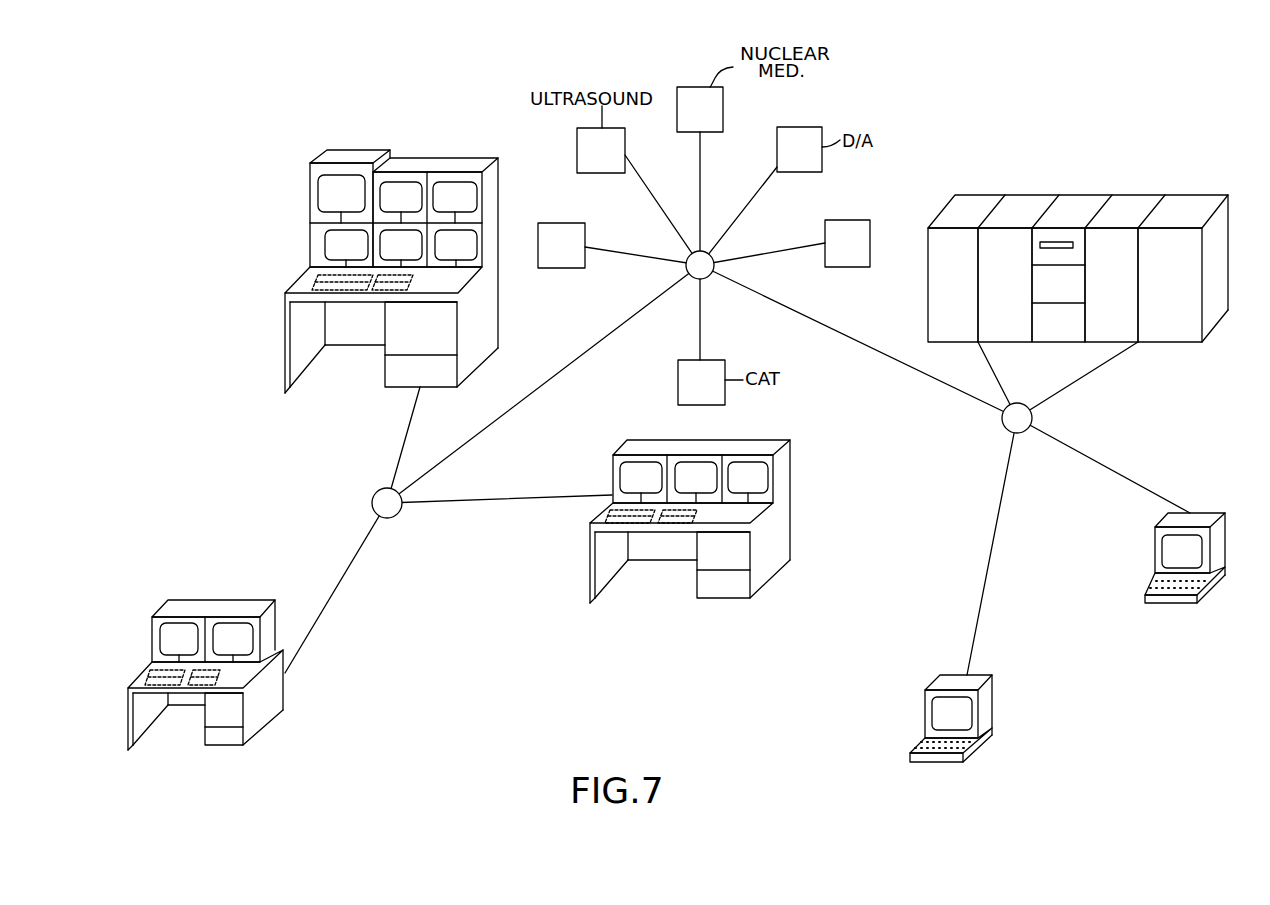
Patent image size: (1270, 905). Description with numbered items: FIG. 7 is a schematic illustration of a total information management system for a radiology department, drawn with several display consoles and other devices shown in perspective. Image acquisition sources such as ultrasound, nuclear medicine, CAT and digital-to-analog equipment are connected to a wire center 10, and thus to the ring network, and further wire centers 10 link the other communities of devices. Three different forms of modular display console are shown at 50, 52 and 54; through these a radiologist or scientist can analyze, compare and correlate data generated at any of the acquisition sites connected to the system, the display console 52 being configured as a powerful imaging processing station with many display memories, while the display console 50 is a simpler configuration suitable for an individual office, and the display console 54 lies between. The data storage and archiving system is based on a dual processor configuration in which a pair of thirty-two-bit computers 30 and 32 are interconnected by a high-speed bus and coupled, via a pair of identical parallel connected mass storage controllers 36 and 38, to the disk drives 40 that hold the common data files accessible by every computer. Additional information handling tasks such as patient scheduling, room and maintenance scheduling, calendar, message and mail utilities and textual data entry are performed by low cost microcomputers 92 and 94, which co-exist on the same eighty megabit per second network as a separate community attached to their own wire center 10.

The wire center 10 is at (708, 278).
The 32-bit computer 30 is at (966, 300).
The 32-bit computer 32 is at (1184, 300).
The mass storage controller 36 is at (1021, 300).
The mass storage controller 38 is at (1124, 300).
The disk drive 40 is at (1067, 303).
The display console 50 is at (263, 723).
The display console 52 is at (432, 157).
The display console 54 is at (792, 500).
The microcomputer 92 is at (1175, 603).
The microcomputer 94 is at (993, 700).